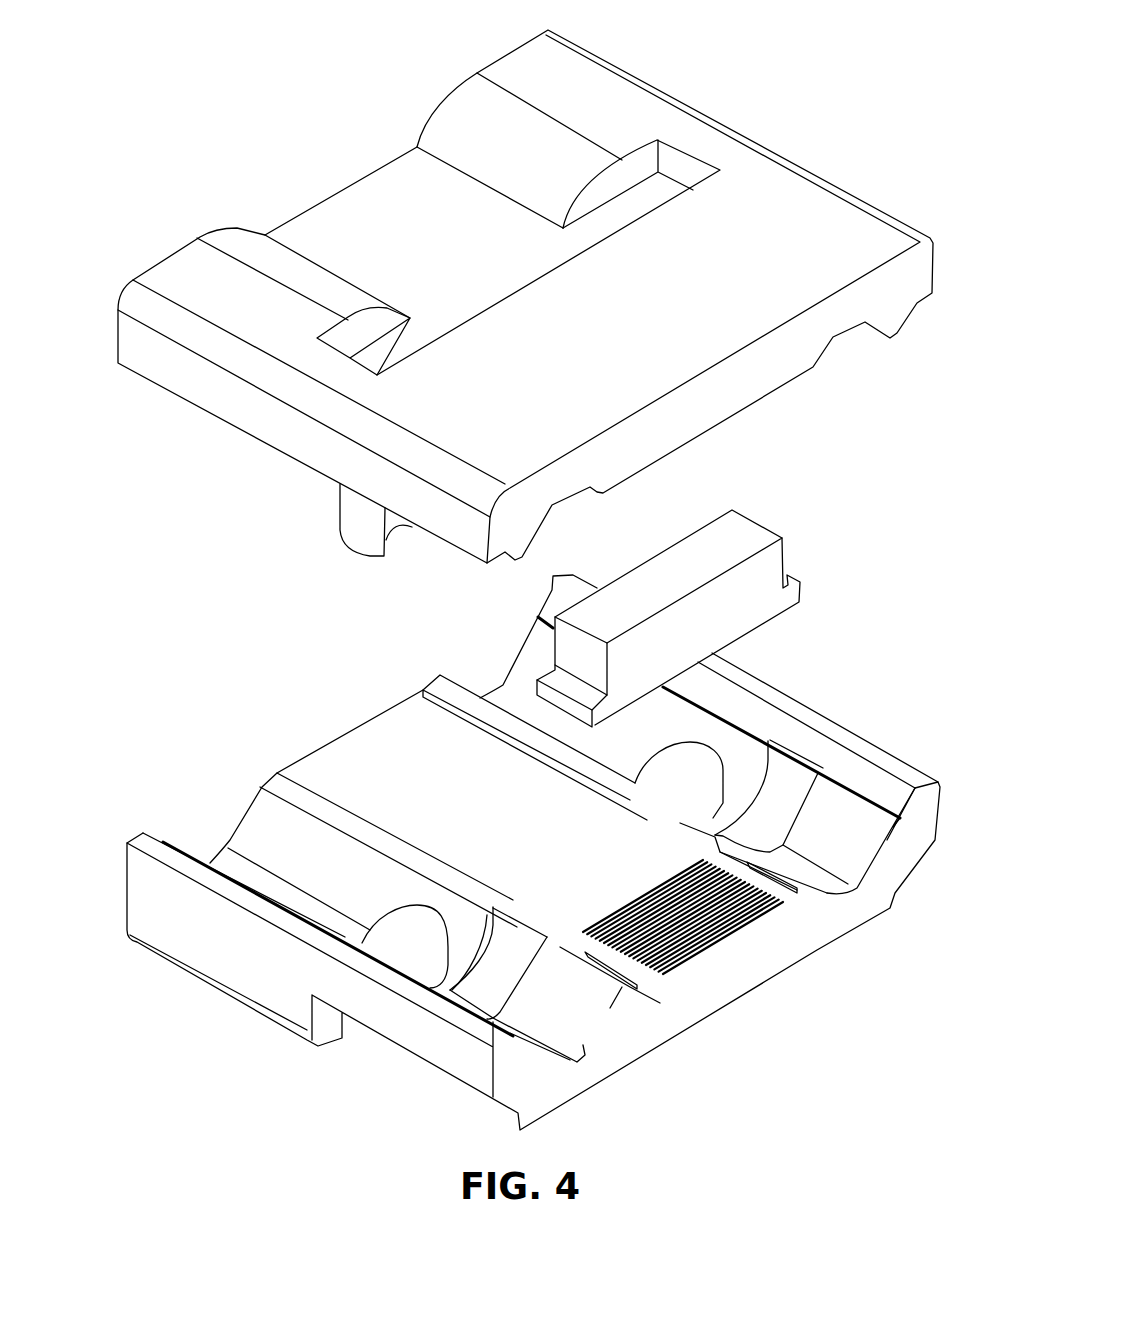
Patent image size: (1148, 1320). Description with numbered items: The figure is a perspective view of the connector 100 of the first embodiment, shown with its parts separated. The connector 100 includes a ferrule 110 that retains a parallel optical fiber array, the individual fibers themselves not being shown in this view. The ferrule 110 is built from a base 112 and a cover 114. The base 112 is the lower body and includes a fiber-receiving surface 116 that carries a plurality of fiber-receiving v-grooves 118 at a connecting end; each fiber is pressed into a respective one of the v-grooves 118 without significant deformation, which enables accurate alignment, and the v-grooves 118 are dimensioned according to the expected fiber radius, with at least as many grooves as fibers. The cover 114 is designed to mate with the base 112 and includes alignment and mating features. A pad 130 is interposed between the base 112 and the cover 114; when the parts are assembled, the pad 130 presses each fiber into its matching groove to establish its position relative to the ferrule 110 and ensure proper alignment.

The connector 100 is at (311, 132).
The ferrule 110 is at (364, 639).
The base 112 is at (905, 842).
The cover 114 is at (767, 203).
The fiber-receiving surface 116 is at (667, 868).
The v-grooves 118 is at (687, 940).
The pad 130 is at (767, 577).